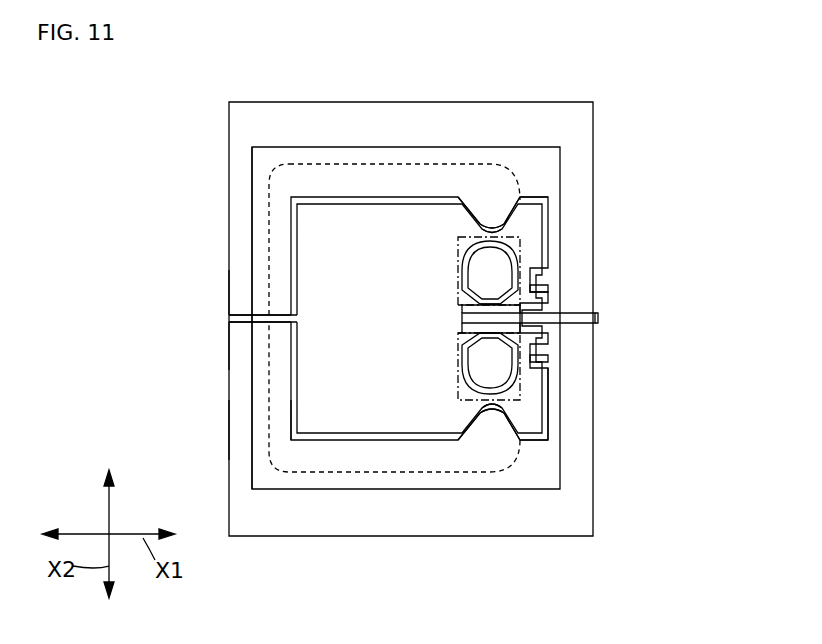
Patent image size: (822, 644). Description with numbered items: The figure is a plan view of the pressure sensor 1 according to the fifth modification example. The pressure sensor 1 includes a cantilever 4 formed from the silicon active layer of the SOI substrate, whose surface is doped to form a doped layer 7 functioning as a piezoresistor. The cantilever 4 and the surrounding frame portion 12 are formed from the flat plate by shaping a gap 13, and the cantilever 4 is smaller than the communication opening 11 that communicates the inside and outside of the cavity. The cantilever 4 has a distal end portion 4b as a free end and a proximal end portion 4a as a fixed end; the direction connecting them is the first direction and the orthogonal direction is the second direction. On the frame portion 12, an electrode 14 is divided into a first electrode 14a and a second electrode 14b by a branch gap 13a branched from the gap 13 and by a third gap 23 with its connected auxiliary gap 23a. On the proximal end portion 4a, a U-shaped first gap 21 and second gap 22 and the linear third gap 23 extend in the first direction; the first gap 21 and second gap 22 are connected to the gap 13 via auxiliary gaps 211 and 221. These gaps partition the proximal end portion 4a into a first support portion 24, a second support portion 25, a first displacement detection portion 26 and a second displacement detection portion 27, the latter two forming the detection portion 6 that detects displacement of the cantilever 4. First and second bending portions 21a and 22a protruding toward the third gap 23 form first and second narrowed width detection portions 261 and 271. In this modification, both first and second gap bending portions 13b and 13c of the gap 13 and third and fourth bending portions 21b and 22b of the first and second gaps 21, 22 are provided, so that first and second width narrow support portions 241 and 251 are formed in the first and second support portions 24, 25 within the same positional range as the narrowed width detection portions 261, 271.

The pressure sensor 1 is at (700, 100).
The cantilever 4 is at (393, 230).
The proximal end portion 4a is at (525, 420).
The distal end portion 4b is at (272, 470).
The detection portion 6 is at (420, 578).
The doped layer 7 is at (427, 147).
The communication opening 11 is at (345, 172).
The frame portion 12 is at (280, 158).
The gap 13 is at (291, 222).
The branch gap 13a is at (247, 320).
The first gap bending portion 13b is at (540, 202).
The second gap bending portion 13c is at (545, 435).
The electrode 14 is at (147, 238).
The first electrode 14a is at (245, 250).
The second electrode 14b is at (235, 340).
The first gap 21 is at (458, 240).
The first bending portion 21a is at (505, 262).
The third bending portion 21b is at (512, 260).
The auxiliary gap 211 is at (535, 292).
The second gap 22 is at (460, 400).
The second bending portion 22a is at (535, 345).
The fourth bending portion 22b is at (515, 378).
The auxiliary gap 221 is at (535, 364).
The third gap 23 is at (540, 315).
The auxiliary gap 23a is at (598, 318).
The first support portion 24 is at (520, 232).
The first width narrow support portion 241 is at (492, 232).
The second support portion 25 is at (515, 402).
The second width narrow support portion 251 is at (490, 410).
The first displacement detection portion 26 is at (468, 318).
The second displacement detection portion 27 is at (470, 326).
The first narrowed width detection portion 261 is at (486, 302).
The second narrowed width detection portion 271 is at (490, 335).